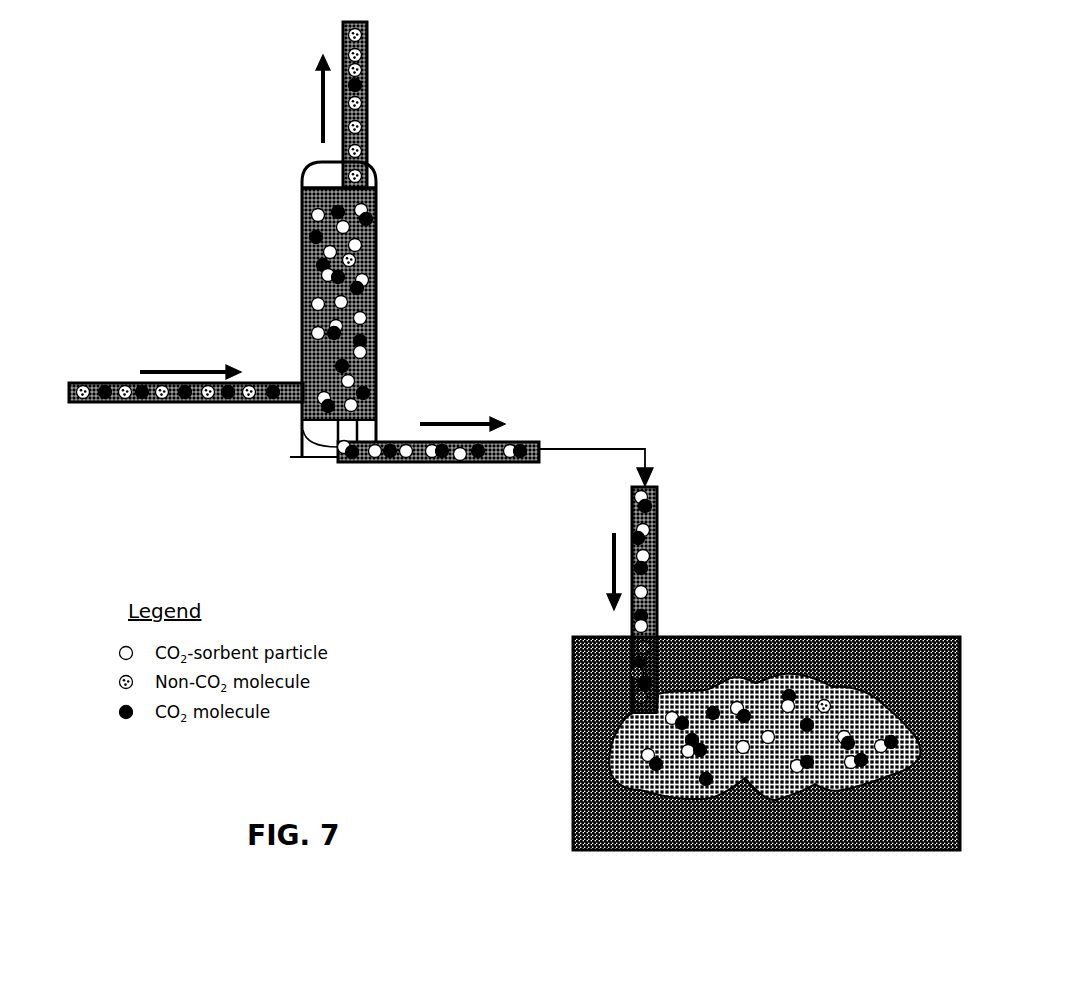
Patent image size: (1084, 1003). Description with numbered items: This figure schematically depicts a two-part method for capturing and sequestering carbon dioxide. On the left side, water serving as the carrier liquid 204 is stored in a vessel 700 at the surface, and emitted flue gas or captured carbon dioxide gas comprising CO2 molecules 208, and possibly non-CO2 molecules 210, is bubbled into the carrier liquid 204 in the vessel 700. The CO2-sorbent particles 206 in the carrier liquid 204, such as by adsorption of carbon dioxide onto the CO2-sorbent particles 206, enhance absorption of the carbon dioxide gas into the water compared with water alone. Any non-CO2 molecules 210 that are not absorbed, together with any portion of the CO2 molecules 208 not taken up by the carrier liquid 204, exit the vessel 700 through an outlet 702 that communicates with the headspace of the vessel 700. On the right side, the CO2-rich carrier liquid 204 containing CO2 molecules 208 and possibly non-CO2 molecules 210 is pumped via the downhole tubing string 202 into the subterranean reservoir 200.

The vessel 700 is at (301, 200).
The outlet 702 is at (342, 43).
The carrier liquid 204 is at (368, 200).
The CO2-sorbent particle 206 is at (312, 304).
The CO2 molecules 208 is at (137, 386).
The non-CO2 molecules 210 is at (79, 385).
The downhole tubing string 202 is at (658, 576).
The subterranean reservoir 200 is at (573, 725).